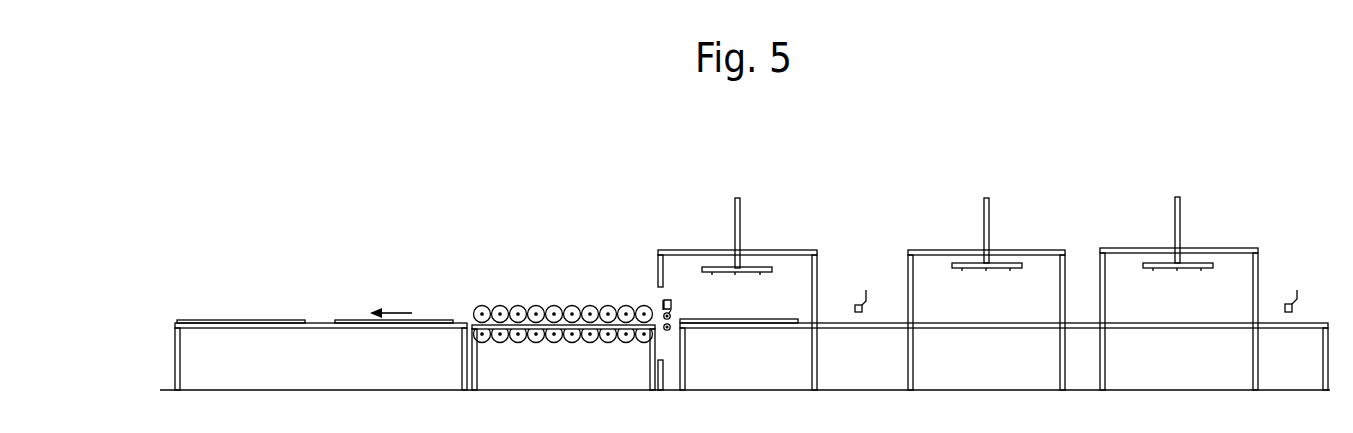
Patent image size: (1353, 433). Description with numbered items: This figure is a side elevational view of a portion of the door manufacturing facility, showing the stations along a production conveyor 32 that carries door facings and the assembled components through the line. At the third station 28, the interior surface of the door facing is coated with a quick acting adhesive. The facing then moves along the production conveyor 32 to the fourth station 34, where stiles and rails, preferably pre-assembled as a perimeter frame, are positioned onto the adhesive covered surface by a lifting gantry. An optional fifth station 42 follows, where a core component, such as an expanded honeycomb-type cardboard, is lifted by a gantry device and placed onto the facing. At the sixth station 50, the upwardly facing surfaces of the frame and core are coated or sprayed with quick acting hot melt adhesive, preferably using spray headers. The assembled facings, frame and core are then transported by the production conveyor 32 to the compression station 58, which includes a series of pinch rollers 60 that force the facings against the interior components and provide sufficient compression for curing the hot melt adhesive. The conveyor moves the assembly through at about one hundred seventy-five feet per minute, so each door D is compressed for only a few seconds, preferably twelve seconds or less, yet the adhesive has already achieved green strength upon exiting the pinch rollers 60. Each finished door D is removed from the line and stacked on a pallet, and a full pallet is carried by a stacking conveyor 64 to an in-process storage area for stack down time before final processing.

The third station 28 is at (1297, 290).
The production conveyor 32 is at (829, 310).
The fourth station 34 is at (1204, 236).
The fifth station 42 is at (1016, 236).
The sixth station 50 is at (866, 290).
The compression station 58 is at (563, 305).
The pinch rollers 60 is at (608, 305).
The stacking conveyor 64 is at (702, 234).
The door D is at (260, 310).